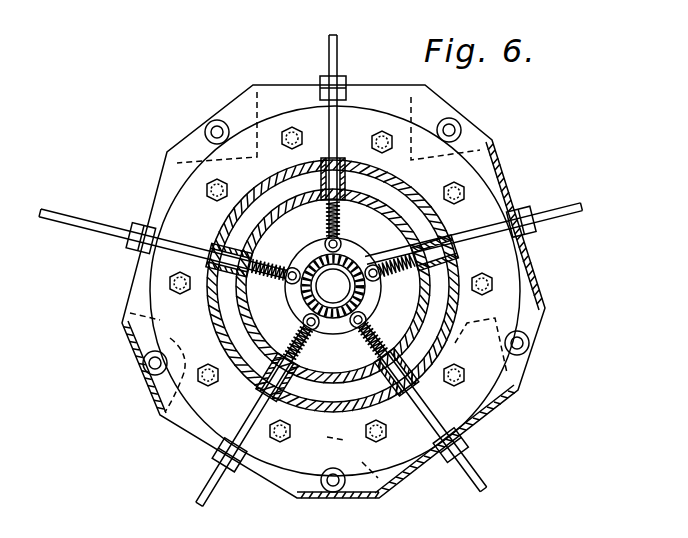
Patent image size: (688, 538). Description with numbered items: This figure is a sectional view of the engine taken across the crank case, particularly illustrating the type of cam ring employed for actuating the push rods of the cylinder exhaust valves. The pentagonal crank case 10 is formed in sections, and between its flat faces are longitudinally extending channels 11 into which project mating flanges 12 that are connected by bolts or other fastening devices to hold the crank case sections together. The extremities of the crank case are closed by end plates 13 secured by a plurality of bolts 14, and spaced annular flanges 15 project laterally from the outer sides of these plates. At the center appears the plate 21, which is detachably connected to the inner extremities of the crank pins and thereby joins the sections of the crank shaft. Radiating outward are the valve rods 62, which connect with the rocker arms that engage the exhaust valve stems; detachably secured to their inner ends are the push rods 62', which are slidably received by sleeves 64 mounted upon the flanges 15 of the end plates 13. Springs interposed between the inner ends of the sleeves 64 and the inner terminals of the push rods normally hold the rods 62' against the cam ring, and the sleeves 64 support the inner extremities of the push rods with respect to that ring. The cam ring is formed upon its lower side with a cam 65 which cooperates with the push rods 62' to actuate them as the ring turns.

The pentagonal crank case 10 is at (376, 88).
The channels 11 is at (478, 142).
The mating flanges 12 is at (243, 108).
The end plates 13 is at (485, 218).
The bolts 14 is at (462, 192).
The annular flanges 15 is at (326, 397).
The plate 21 is at (354, 263).
The valve rods 62 is at (321, 160).
The push rods 62' is at (321, 415).
The sleeves 64 is at (438, 266).
The cam 65 is at (297, 305).